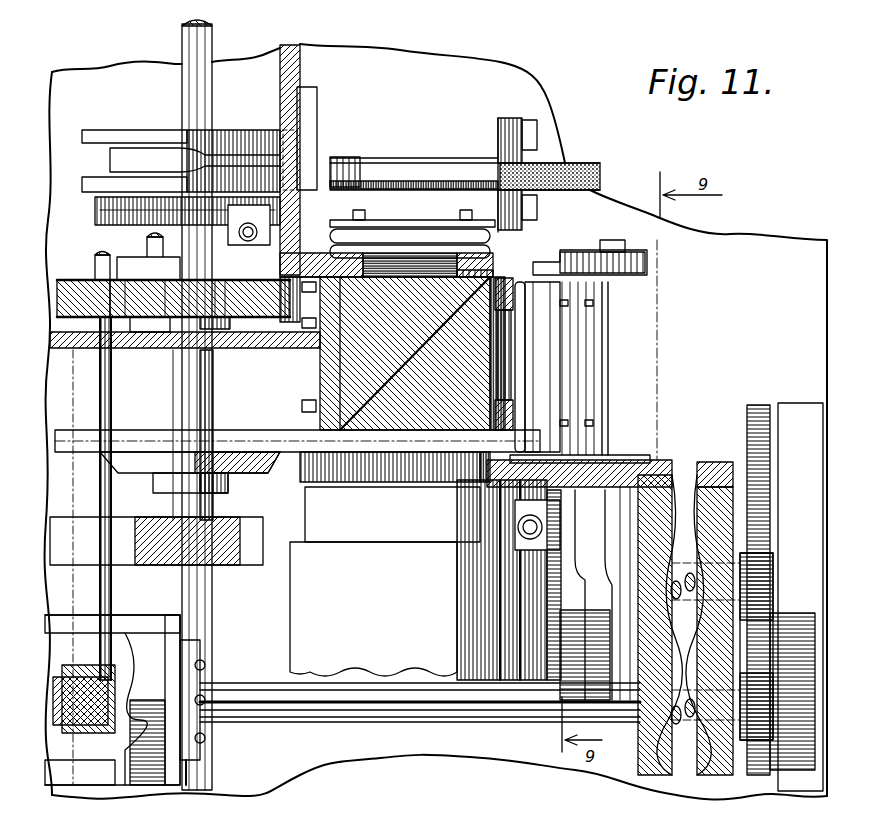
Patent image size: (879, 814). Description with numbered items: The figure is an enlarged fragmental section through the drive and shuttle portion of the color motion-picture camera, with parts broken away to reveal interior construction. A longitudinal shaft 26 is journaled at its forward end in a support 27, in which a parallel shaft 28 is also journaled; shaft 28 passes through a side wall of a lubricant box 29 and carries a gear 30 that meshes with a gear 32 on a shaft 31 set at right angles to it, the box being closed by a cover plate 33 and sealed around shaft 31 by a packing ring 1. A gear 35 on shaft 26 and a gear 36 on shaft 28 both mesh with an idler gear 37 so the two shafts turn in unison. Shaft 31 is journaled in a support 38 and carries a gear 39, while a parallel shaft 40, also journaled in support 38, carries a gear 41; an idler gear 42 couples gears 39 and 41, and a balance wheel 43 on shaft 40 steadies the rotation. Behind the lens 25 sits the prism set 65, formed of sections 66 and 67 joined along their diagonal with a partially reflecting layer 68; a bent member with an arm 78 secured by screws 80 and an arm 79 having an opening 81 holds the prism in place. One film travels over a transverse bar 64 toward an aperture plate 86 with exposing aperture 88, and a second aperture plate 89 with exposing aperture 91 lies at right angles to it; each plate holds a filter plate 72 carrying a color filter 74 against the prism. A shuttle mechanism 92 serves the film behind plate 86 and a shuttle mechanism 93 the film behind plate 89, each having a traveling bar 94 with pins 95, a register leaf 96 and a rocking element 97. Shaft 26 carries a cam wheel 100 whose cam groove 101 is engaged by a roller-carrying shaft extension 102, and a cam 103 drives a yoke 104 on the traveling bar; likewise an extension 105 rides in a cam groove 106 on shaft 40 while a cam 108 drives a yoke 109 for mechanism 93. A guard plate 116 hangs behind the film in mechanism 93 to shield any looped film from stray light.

The packing ring 1 is at (192, 752).
The lens 25 is at (373, 609).
The shaft 26 is at (184, 43).
The support 27 is at (120, 532).
The shaft 28 is at (112, 404).
The box 29 is at (149, 609).
The gear 30 is at (128, 652).
The shaft 31 is at (264, 670).
The gear 32 is at (108, 734).
The cover plate 33 is at (176, 635).
The gear 35 is at (240, 268).
The gear 36 is at (80, 278).
The idler gear 37 is at (120, 328).
The support 38 is at (638, 770).
The gear 39 is at (755, 740).
The shaft 40 is at (680, 566).
The gear 41 is at (772, 552).
The idler gear 42 is at (747, 436).
The balance wheel 43 is at (796, 597).
The bar 64 is at (590, 165).
The prism set 65 is at (357, 354).
The prism section 66 is at (342, 380).
The prism section 67 is at (355, 438).
The layer 68 is at (418, 435).
The filter plate 72 is at (322, 280).
The color filter 74 is at (388, 262).
The arm 78 is at (322, 418).
The arm 79 is at (502, 806).
The screws 80 is at (318, 312).
The opening 81 is at (546, 806).
The aperture plate 86 is at (402, 262).
The exposing aperture 88 is at (492, 262).
The aperture plate 89 is at (522, 320).
The exposing aperture 91 is at (528, 385).
The shuttle mechanism 92 is at (480, 140).
The shuttle mechanism 93 is at (609, 339).
The traveling bar 94 is at (448, 226).
The pins 95 is at (352, 226).
The register leaf 96 is at (375, 235).
The rocking element 97 is at (366, 172).
The cam wheel 100 is at (130, 130).
The cam groove 101 is at (120, 150).
The roller-carrying shaft extension 102 is at (262, 135).
The cam 103 is at (97, 195).
The yoke 104 is at (130, 232).
The roller-carrying shaft extension 105 is at (585, 500).
The cam groove 106 is at (592, 685).
The cam 108 is at (565, 690).
The yoke 109 is at (545, 680).
The guard plate 116 is at (610, 408).